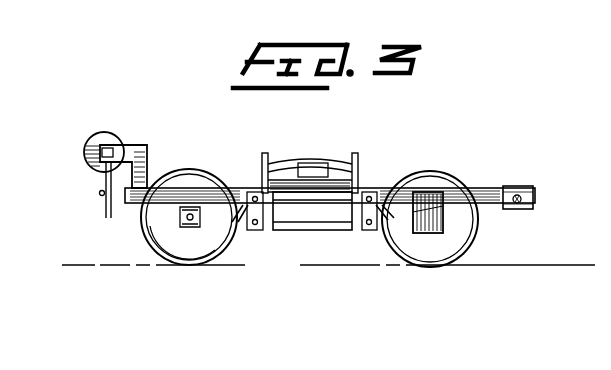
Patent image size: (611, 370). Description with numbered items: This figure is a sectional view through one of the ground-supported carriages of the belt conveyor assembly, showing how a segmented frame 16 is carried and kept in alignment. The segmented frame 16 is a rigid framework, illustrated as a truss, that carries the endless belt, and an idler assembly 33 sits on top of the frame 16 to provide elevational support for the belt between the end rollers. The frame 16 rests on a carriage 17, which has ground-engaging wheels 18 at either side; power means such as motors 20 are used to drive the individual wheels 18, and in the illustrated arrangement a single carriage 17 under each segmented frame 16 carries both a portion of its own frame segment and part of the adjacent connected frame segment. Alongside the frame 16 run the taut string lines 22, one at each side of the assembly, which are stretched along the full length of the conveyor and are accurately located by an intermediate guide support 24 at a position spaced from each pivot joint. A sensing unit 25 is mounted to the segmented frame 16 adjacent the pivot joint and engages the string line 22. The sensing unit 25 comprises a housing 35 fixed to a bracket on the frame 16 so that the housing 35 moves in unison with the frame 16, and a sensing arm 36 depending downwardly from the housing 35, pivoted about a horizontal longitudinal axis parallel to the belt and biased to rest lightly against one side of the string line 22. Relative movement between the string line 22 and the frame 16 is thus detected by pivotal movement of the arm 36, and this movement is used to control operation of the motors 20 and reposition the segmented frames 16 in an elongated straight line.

The segmented frame 16 is at (326, 230).
The carriage 17 is at (397, 186).
The wheel 18 is at (188, 255).
The motor 20 is at (446, 222).
The string line 22 is at (100, 195).
The intermediate guide support 24 is at (534, 205).
The sensing unit 25 is at (95, 140).
The idler assembly 33 is at (305, 164).
The housing 35 is at (116, 132).
The sensing arm 36 is at (104, 188).